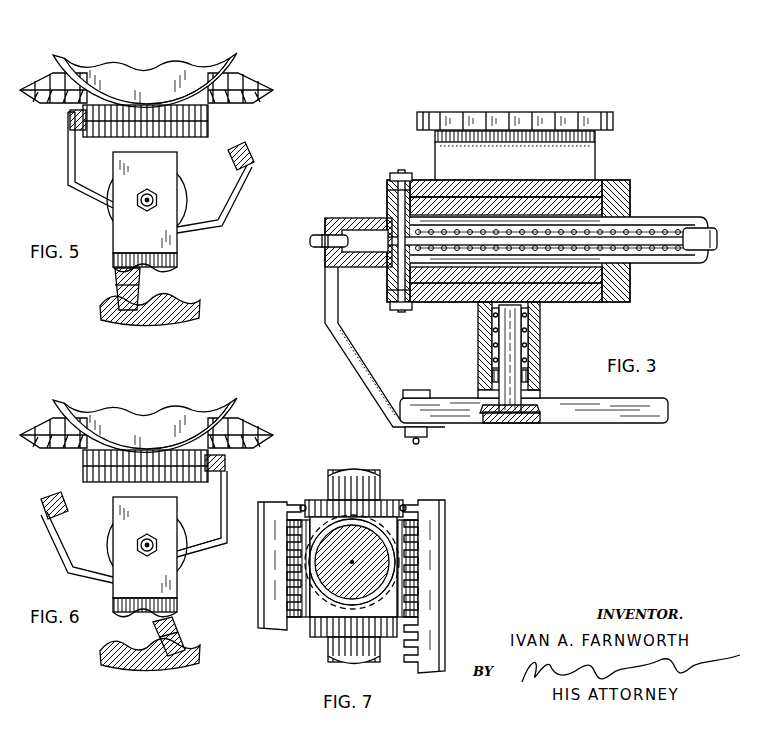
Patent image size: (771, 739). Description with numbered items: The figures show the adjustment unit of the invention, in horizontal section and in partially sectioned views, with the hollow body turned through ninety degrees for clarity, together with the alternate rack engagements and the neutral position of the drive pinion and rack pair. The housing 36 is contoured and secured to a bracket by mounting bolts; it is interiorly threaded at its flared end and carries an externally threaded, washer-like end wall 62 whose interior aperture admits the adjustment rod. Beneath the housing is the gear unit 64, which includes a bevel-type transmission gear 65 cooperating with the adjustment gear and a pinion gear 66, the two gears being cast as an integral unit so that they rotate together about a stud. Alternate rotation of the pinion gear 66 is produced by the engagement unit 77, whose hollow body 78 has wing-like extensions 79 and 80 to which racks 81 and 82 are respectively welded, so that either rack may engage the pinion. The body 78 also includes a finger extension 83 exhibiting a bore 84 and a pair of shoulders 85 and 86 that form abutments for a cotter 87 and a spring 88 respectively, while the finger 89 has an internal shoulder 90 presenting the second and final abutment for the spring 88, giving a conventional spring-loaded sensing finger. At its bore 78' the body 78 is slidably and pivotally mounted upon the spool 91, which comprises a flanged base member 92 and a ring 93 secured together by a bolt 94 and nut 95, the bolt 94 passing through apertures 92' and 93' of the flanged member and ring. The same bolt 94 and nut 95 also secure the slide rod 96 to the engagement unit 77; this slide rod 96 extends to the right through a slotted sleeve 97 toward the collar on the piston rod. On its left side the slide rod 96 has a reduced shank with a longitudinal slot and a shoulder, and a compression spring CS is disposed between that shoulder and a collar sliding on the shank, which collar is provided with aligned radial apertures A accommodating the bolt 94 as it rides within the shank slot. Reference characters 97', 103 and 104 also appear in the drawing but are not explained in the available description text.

In FIG. 5, the housing 36 is at (232, 60).
In FIG. 6, the housing 36 is at (223, 408).
In FIG. 5, the end wall 62 is at (148, 80).
In FIG. 6, the end wall 62 is at (163, 420).
In FIG. 5, the gear unit 64 is at (296, 106).
In FIG. 6, the gear unit 64 is at (298, 428).
In FIG. 5, the transmission gear 65 is at (247, 80).
In FIG. 6, the transmission gear 65 is at (253, 414).
In FIG. 5, the pinion gear 66 is at (205, 121).
In FIG. 6, the pinion gear 66 is at (100, 470).
In FIG. 7, the pinion gear 66 is at (309, 578).
In FIG. 6, the engagement unit 77 is at (200, 553).
In FIG. 7, the engagement unit 77 is at (389, 500).
In FIG. 3, the engagement unit 77 is at (598, 181).
In FIG. 3, the hollow body 78 is at (525, 168).
In FIG. 3, the bore 78' is at (506, 177).
In FIG. 5, the wing-like extension 79 is at (68, 140).
In FIG. 6, the wing-like extension 79 is at (55, 552).
In FIG. 7, the wing-like extension 79 is at (293, 518).
In FIG. 3, the wing-like extension 79 is at (582, 152).
In FIG. 5, the wing-like extension 80 is at (250, 172).
In FIG. 6, the wing-like extension 80 is at (230, 493).
In FIG. 7, the wing-like extension 80 is at (411, 518).
In FIG. 5, the rack 81 is at (70, 117).
In FIG. 6, the rack 81 is at (55, 500).
In FIG. 7, the rack 81 is at (266, 630).
In FIG. 3, the rack 81 is at (580, 124).
In FIG. 5, the rack 82 is at (241, 146).
In FIG. 6, the rack 82 is at (225, 463).
In FIG. 7, the rack 82 is at (434, 674).
In FIG. 3, the finger extension 83 is at (537, 344).
In FIG. 3, the bore 84 is at (478, 342).
In FIG. 3, the shoulder 85 is at (477, 324).
In FIG. 3, the shoulder 86 is at (478, 372).
In FIG. 3, the cotter 87 is at (537, 318).
In FIG. 3, the spring 88 is at (538, 364).
In FIG. 5, the finger 89 is at (116, 291).
In FIG. 6, the finger 89 is at (184, 638).
In FIG. 3, the finger 89 is at (500, 396).
In FIG. 3, the internal shoulder 90 is at (538, 378).
In FIG. 3, the spool 91 is at (388, 184).
In FIG. 3, the flanged base member 92 is at (559, 232).
In FIG. 3, the aperture 92' is at (521, 243).
In FIG. 3, the ring 93 is at (385, 318).
In FIG. 3, the aperture 93' is at (386, 297).
In FIG. 3, the bolt 94 is at (400, 313).
In FIG. 3, the nut 95 is at (397, 172).
In FIG. 3, the slide rod 96 is at (710, 228).
In FIG. 3, the slotted sleeve 97 is at (516, 236).
In FIG. 3, the end wall 97' is at (417, 238).
In FIG. 5, the base 103 is at (222, 300).
In FIG. 6, the base 103 is at (100, 658).
In FIG. 3, the base 103 is at (602, 413).
In FIG. 5, the block 104 is at (180, 252).
In FIG. 6, the block 104 is at (180, 588).
In FIG. 3, the radial apertures A is at (354, 277).
In FIG. 3, the compression spring CS is at (647, 262).